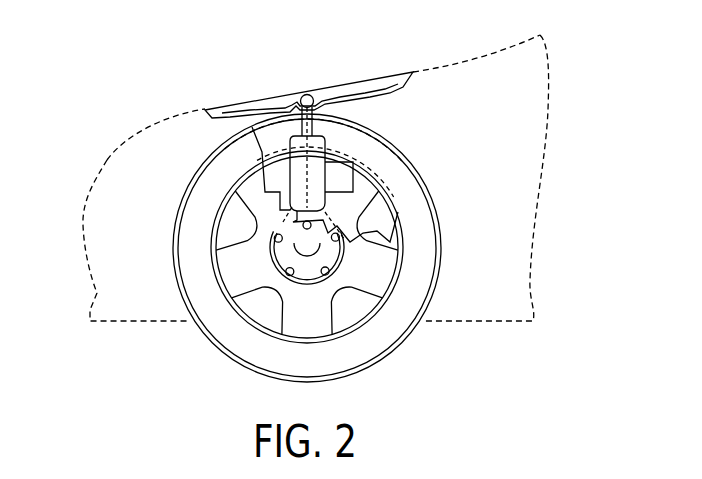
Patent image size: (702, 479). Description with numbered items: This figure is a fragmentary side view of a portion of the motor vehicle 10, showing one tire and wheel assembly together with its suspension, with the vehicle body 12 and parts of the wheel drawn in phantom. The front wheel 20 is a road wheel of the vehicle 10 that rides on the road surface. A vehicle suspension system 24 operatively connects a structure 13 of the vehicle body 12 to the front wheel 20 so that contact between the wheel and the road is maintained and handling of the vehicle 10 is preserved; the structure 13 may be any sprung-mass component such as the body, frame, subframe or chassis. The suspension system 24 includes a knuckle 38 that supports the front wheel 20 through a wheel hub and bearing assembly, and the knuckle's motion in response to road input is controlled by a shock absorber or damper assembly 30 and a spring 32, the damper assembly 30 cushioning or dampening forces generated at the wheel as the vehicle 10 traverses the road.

The motor vehicle 10 is at (119, 73).
The vehicle body 12 is at (107, 160).
The structure 13 is at (268, 105).
The front wheel 20 is at (423, 235).
The vehicle suspension system 24 is at (333, 167).
The shock absorber or damper assembly 30 is at (290, 195).
The spring 32 is at (290, 160).
The knuckle 38 is at (278, 238).